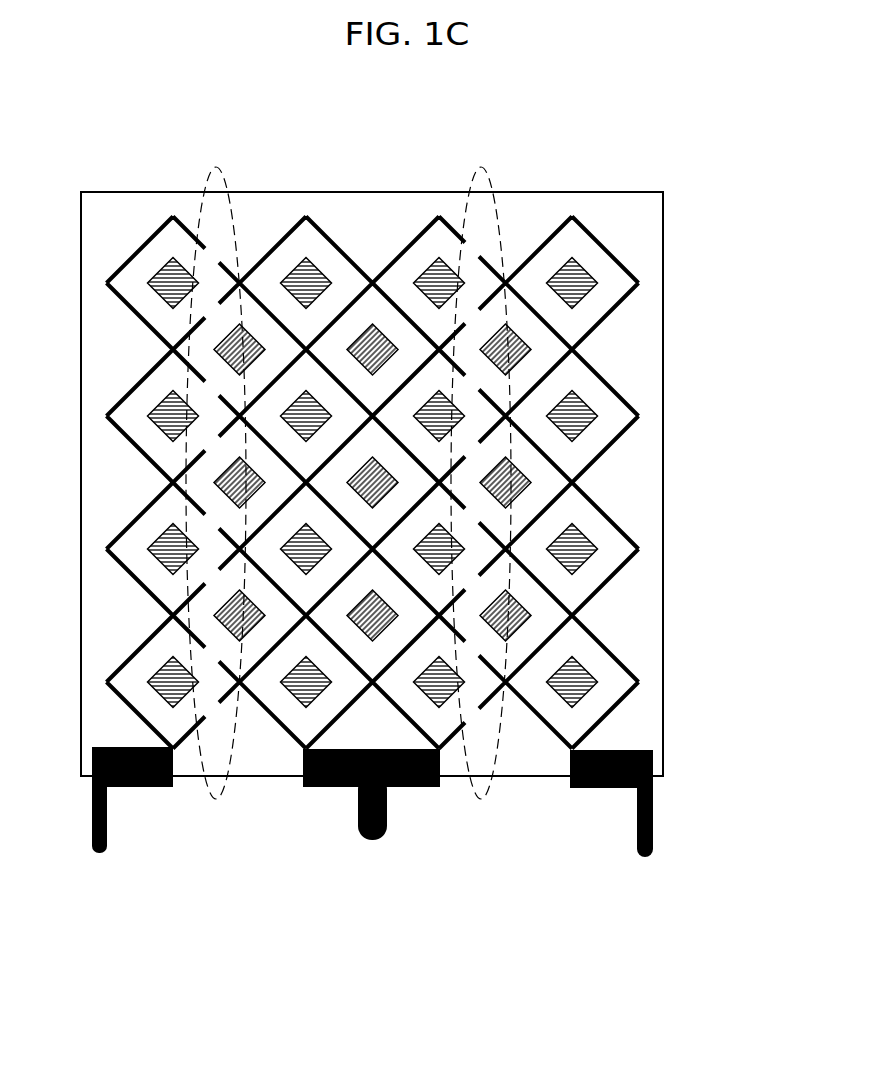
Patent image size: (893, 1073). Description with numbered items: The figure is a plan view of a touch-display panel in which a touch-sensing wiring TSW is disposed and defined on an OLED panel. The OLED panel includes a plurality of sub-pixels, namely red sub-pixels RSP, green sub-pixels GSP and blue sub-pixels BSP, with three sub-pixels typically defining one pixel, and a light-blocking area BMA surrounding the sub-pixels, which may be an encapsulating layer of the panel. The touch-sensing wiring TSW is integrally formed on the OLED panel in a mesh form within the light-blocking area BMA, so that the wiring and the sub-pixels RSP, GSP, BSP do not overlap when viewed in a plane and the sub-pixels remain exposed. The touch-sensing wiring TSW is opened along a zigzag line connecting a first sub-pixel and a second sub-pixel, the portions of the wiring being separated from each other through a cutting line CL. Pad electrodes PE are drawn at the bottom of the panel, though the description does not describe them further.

The touch-sensing wiring TSW is at (150, 238).
The cutting line CL is at (487, 168).
The light-blocking area BMA is at (522, 208).
The blue sub-pixel BSP is at (523, 337).
The green sub-pixel GSP is at (594, 412).
The red sub-pixel RSP is at (523, 475).
The pad electrodes PE is at (590, 788).